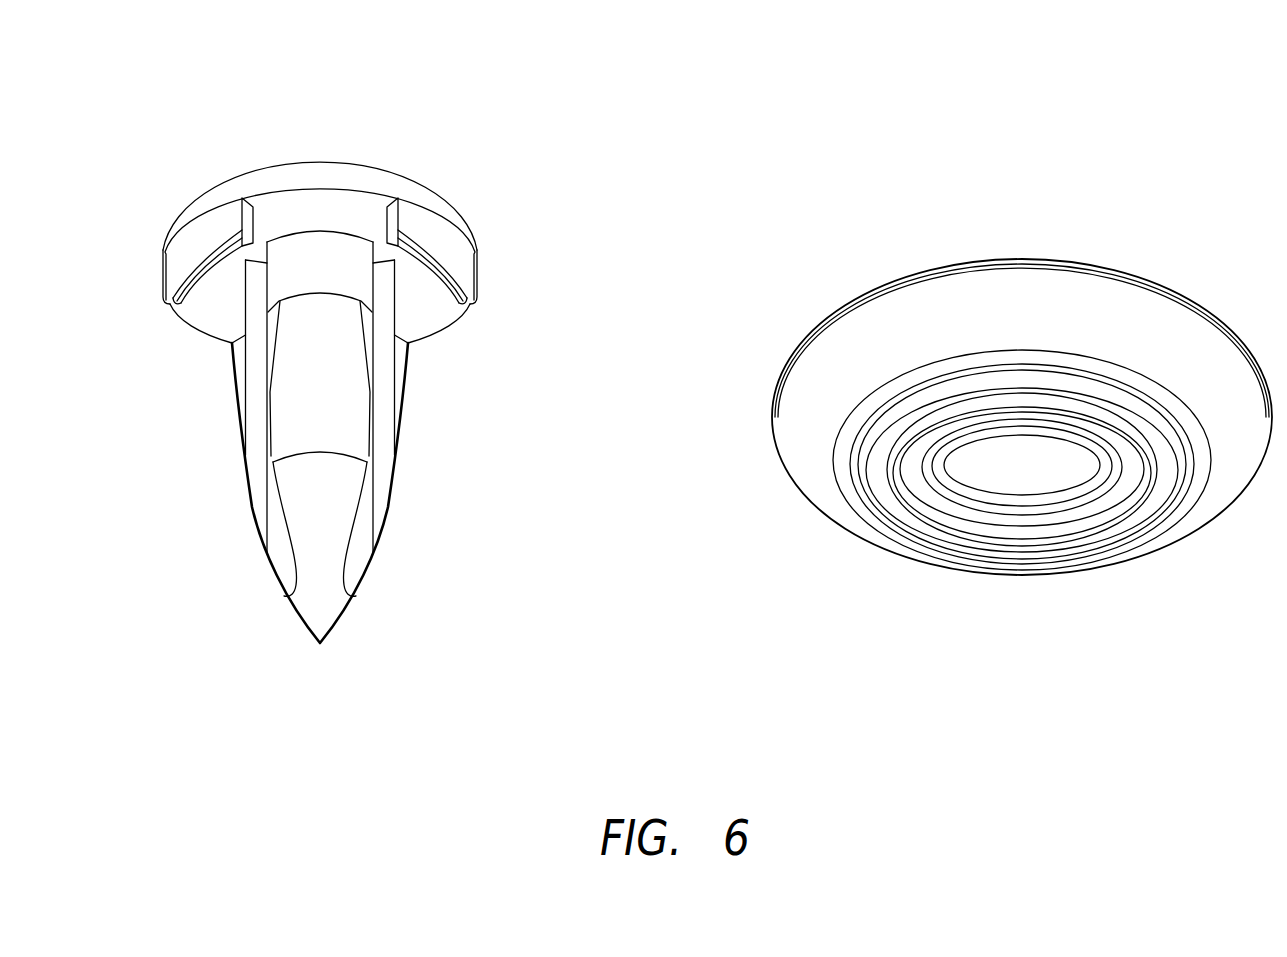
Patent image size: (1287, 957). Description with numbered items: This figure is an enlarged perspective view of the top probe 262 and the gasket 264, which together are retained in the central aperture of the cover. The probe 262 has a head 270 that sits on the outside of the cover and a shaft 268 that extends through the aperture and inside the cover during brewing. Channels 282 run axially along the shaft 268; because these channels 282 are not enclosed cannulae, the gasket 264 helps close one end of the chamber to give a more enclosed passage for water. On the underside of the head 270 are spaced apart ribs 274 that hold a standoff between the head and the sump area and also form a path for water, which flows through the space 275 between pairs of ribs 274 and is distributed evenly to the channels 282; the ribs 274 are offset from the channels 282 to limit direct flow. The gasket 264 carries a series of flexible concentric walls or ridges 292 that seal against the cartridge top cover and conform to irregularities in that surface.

The top probe 262 is at (176, 166).
The head 270 is at (256, 174).
The space between pairs of ribs 275 is at (332, 204).
The ribs 274 is at (172, 284).
The shaft 268 is at (230, 413).
The channels 282 is at (280, 538).
The gasket 264 is at (810, 297).
The concentric ridges 292 is at (912, 545).